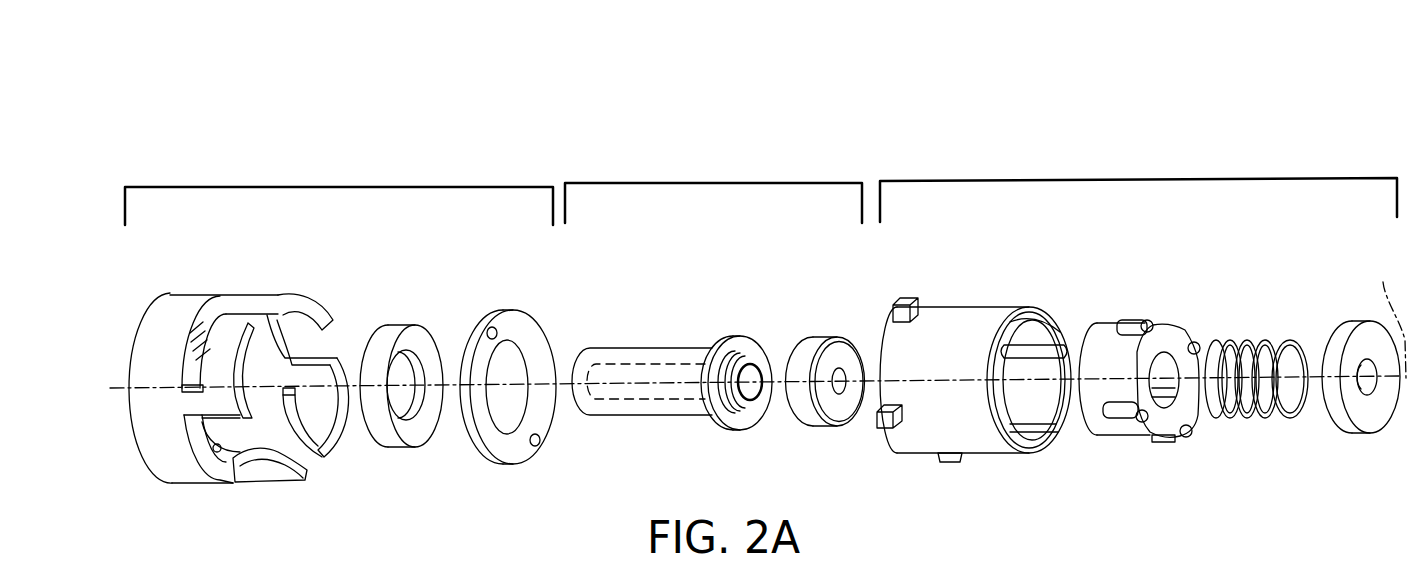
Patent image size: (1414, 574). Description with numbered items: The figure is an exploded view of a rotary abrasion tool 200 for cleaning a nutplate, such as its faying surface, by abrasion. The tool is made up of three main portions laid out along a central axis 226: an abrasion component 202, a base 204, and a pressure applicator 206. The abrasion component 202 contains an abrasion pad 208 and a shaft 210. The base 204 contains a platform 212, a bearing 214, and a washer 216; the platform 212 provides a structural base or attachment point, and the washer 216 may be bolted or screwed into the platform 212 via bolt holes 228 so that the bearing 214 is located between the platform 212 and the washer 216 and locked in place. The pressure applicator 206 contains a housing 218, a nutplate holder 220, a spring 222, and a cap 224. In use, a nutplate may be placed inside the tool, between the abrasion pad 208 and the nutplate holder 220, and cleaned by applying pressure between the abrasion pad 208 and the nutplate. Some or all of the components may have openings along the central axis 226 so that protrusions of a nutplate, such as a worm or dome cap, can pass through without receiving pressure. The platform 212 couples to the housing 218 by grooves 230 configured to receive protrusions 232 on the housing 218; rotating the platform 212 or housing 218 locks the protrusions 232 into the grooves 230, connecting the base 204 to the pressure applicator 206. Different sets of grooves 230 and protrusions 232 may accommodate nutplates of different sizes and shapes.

The rotary abrasion tool 200 is at (1310, 108).
The abrasion component 202 is at (714, 183).
The base 204 is at (338, 187).
The pressure applicator 206 is at (1137, 180).
The abrasion pad 208 is at (837, 354).
The shaft 210 is at (658, 360).
The platform 212 is at (202, 300).
The bearing 214 is at (402, 340).
The washer 216 is at (523, 332).
The housing 218 is at (990, 317).
The nutplate holder 220 is at (1118, 357).
The spring 222 is at (1245, 350).
The cap 224 is at (1357, 340).
The central axis 226 is at (1384, 313).
The bolt holes 228 is at (495, 338).
The grooves 230 is at (201, 334).
The protrusions 232 is at (902, 302).